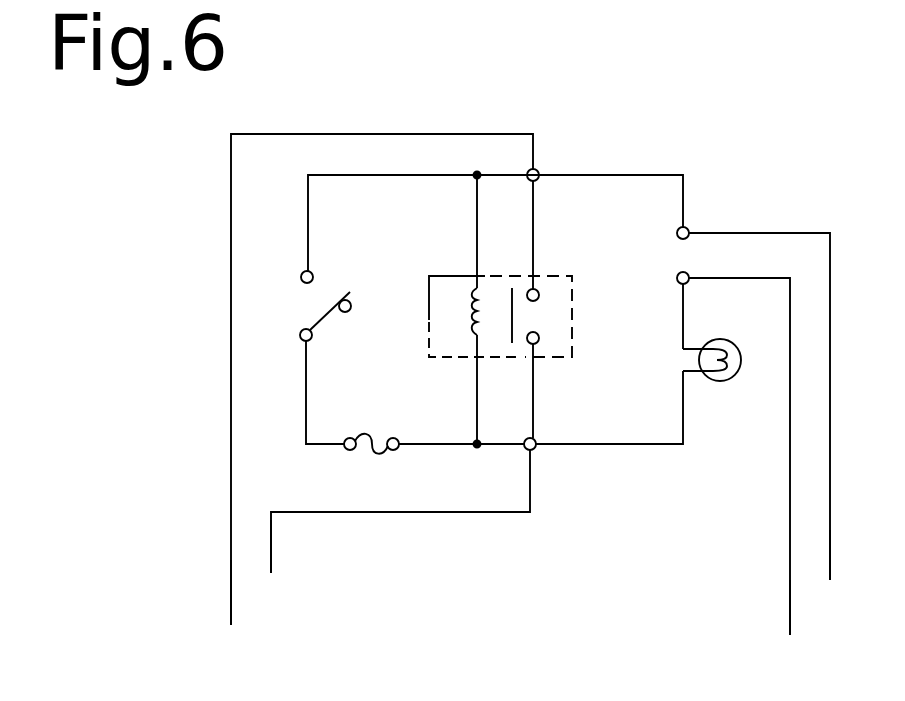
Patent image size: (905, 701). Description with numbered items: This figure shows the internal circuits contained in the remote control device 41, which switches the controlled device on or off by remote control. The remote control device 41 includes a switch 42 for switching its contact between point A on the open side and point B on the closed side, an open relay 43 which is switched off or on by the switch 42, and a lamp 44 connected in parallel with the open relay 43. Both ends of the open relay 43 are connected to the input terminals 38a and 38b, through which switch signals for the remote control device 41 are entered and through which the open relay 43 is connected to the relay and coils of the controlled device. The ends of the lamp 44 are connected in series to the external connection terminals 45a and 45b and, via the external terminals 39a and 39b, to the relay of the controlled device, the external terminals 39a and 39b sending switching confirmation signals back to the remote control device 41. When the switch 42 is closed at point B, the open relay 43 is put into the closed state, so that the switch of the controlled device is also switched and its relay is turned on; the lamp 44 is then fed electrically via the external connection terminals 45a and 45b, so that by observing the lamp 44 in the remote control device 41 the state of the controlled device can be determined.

The input terminal 38a is at (270, 650).
The input terminal 38b is at (320, 595).
The external terminal 39a is at (829, 660).
The external terminal 39b is at (876, 605).
The remote control device 41 is at (610, 463).
The switch 42 is at (328, 318).
The open relay 43 is at (552, 275).
The lamp 44 is at (726, 379).
The external connection terminal 45a is at (689, 226).
The external connection terminal 45b is at (678, 284).